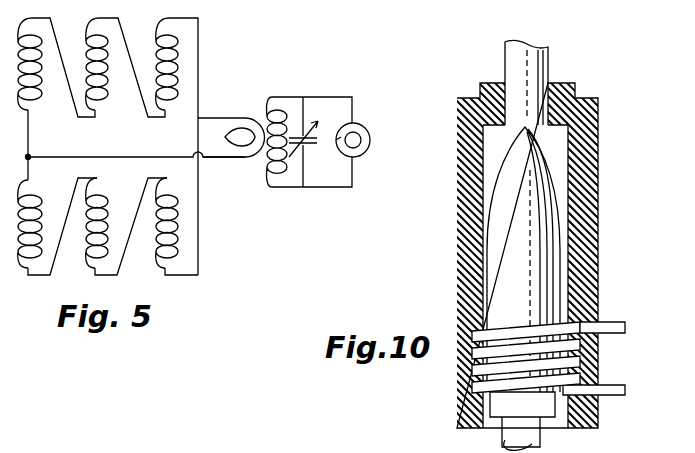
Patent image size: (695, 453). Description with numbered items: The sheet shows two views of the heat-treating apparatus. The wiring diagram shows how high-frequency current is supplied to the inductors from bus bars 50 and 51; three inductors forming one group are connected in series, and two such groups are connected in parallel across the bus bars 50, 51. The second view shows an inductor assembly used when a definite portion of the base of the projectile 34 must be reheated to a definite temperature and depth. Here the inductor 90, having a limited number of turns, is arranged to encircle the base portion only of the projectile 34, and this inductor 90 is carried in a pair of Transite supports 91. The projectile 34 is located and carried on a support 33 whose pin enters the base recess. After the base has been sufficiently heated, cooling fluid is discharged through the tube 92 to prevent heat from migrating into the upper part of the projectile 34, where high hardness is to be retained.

In FIG. 5, the bus bar 50 is at (163, 157).
In FIG. 5, the bus bar 51 is at (208, 118).
In FIG. 10, the Transite support 91 is at (598, 283).
In FIG. 10, the tube 92 is at (548, 62).
In FIG. 10, the projectile 34 is at (532, 187).
In FIG. 10, the inductor 90 is at (585, 344).
In FIG. 10, the support 33 is at (505, 432).